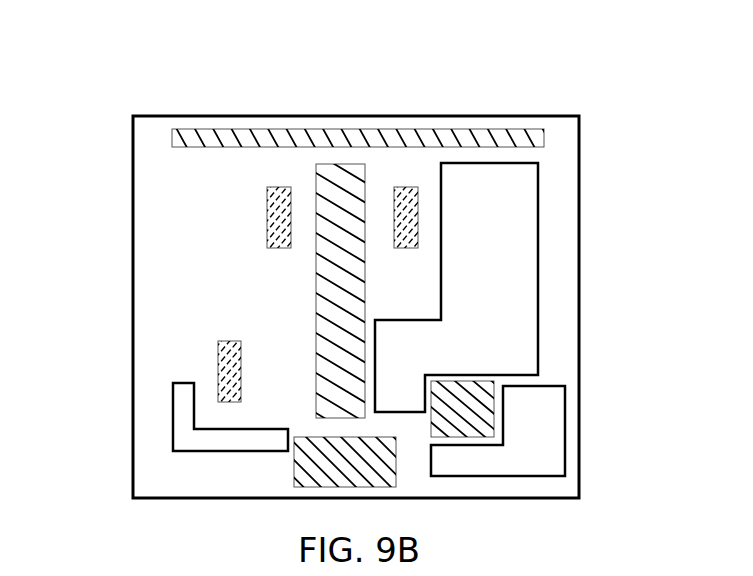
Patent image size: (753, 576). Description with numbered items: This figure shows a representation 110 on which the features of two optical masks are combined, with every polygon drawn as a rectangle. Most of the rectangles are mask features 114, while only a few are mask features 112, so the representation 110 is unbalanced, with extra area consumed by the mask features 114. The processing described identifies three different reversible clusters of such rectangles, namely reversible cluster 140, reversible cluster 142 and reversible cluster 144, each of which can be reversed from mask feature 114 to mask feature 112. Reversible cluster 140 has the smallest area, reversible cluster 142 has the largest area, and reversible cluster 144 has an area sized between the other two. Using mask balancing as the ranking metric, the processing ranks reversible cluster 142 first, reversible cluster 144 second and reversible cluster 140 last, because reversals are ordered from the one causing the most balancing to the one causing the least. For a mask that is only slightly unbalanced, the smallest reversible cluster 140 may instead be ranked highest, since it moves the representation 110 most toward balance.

The representation 110 is at (493, 100).
The mask feature 112 is at (267, 220).
The mask feature 114 is at (172, 140).
The reversible cluster 140 is at (173, 420).
The reversible cluster 142 is at (540, 238).
The reversible cluster 144 is at (567, 457).